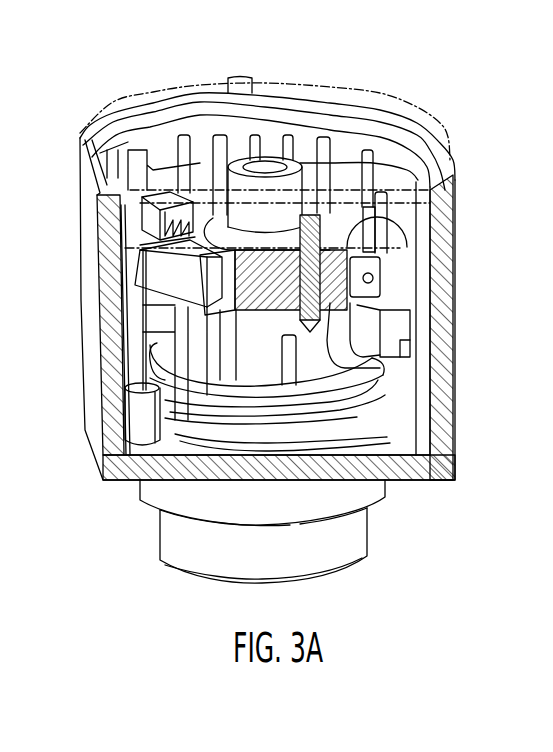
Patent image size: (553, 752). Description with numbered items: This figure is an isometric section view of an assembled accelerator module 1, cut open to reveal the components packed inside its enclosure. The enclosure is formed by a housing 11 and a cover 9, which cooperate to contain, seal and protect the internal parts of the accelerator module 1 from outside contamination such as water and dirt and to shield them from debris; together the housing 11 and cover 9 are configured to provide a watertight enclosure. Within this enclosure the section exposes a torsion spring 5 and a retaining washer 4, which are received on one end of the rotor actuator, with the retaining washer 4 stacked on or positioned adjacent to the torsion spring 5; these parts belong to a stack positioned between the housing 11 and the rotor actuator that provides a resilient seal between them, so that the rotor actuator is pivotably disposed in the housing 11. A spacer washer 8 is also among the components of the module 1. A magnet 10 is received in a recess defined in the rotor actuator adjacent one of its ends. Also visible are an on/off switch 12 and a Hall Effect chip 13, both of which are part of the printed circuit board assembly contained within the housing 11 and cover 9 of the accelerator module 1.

The accelerator module 1 is at (490, 177).
The retaining washer 4 is at (383, 410).
The torsion spring 5 is at (375, 390).
The spacer washer 8 is at (213, 218).
The cover 9 is at (114, 99).
The magnet 10 is at (180, 246).
The housing 11 is at (447, 343).
The on/off switch 12 is at (337, 272).
The Hall Effect chip 13 is at (158, 223).